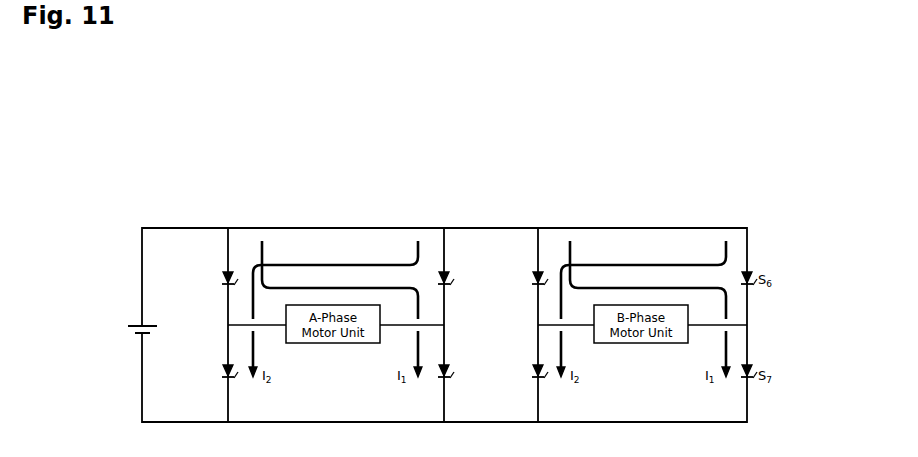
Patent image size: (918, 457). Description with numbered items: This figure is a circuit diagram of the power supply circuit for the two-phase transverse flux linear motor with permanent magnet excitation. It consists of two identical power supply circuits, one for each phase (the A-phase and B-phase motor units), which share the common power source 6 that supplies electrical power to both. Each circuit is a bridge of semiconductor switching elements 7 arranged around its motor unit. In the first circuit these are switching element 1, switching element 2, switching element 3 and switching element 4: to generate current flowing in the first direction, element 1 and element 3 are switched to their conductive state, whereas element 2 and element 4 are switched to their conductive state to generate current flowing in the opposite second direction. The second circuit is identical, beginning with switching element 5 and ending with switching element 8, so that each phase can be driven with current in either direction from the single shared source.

The power source 6 is at (136, 322).
The semiconductor switching elements 7 is at (493, 191).
The switch S1 1 is at (219, 280).
The switch S2 2 is at (454, 280).
The switch S3 3 is at (454, 375).
The switch S4 4 is at (219, 374).
The switch S5 5 is at (530, 280).
The switch S8 8 is at (530, 374).